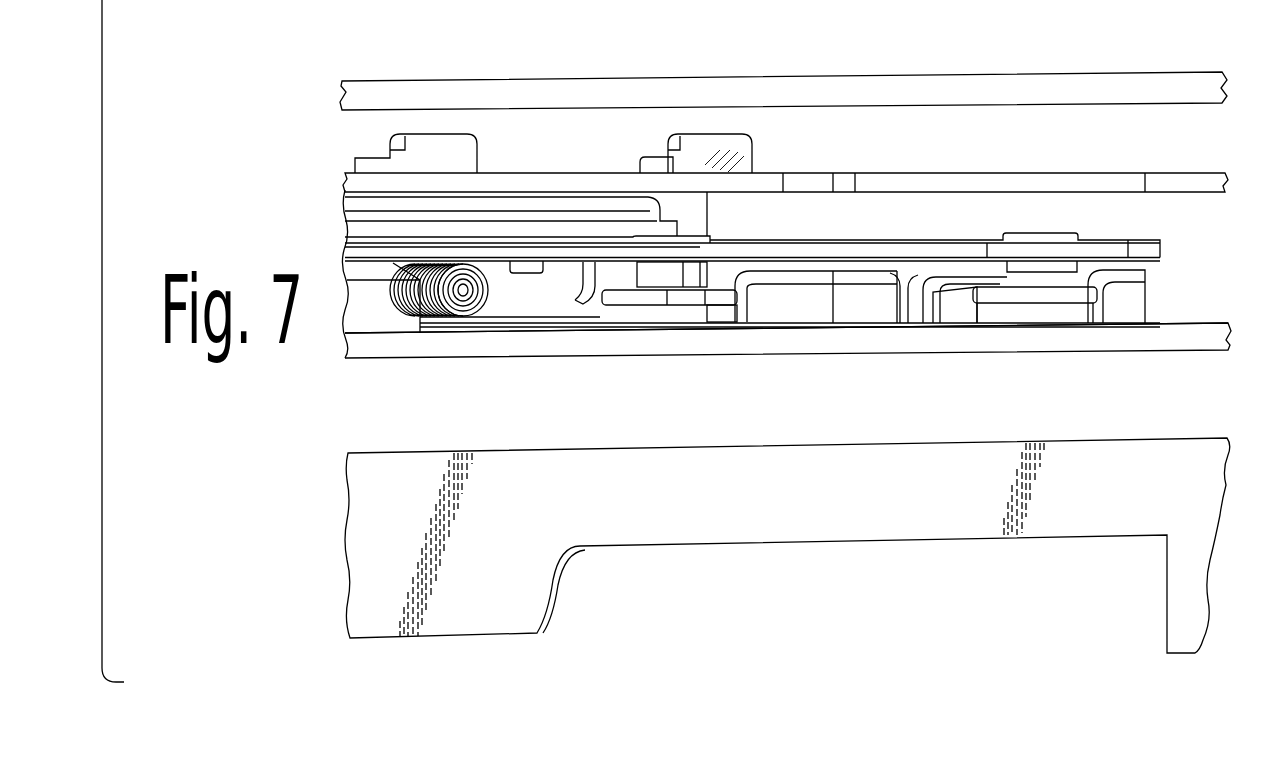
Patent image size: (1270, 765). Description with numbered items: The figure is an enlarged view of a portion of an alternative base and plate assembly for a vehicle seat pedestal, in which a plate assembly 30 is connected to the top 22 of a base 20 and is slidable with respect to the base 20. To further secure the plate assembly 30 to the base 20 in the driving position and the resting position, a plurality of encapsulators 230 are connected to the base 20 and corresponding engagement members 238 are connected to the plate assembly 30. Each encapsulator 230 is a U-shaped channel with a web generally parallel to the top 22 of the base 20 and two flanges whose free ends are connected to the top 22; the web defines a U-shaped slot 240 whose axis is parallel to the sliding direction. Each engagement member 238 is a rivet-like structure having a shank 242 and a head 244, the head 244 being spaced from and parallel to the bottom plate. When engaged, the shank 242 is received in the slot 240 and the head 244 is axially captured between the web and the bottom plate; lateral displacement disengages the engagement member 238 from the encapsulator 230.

The plate assembly 30 is at (528, 55).
The base 20 is at (1160, 340).
The top of the base 22 is at (1175, 321).
The encapsulator 230 is at (917, 308).
The engagement member 238 is at (685, 297).
The U-shaped slot 240 is at (850, 293).
The shank 242 is at (640, 270).
The head 244 is at (650, 297).